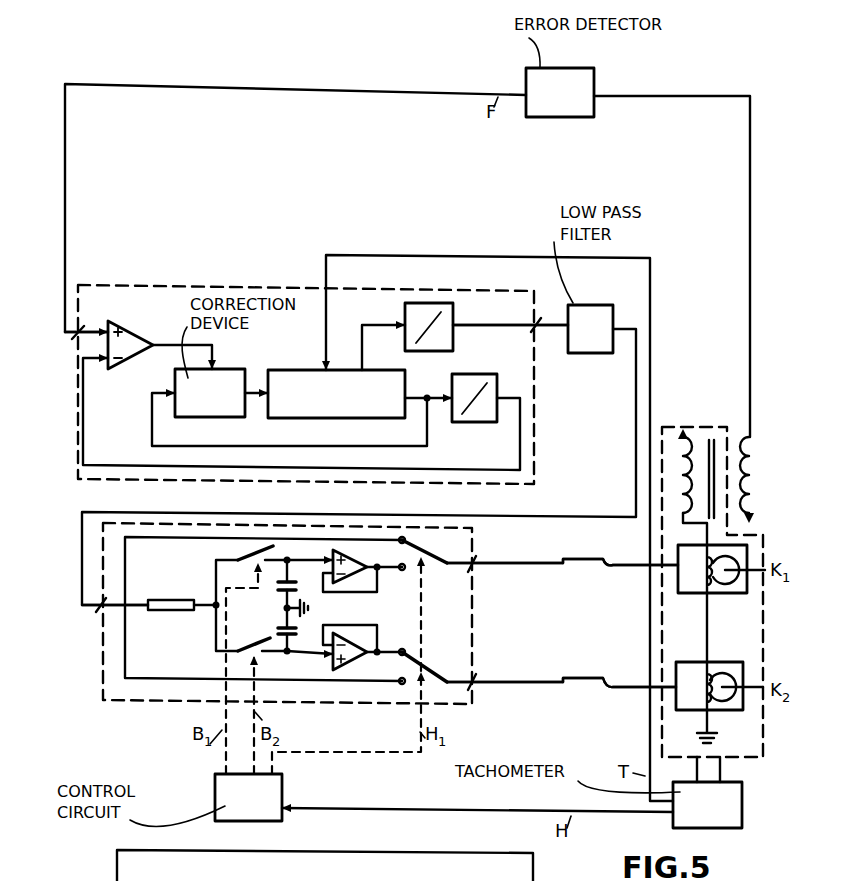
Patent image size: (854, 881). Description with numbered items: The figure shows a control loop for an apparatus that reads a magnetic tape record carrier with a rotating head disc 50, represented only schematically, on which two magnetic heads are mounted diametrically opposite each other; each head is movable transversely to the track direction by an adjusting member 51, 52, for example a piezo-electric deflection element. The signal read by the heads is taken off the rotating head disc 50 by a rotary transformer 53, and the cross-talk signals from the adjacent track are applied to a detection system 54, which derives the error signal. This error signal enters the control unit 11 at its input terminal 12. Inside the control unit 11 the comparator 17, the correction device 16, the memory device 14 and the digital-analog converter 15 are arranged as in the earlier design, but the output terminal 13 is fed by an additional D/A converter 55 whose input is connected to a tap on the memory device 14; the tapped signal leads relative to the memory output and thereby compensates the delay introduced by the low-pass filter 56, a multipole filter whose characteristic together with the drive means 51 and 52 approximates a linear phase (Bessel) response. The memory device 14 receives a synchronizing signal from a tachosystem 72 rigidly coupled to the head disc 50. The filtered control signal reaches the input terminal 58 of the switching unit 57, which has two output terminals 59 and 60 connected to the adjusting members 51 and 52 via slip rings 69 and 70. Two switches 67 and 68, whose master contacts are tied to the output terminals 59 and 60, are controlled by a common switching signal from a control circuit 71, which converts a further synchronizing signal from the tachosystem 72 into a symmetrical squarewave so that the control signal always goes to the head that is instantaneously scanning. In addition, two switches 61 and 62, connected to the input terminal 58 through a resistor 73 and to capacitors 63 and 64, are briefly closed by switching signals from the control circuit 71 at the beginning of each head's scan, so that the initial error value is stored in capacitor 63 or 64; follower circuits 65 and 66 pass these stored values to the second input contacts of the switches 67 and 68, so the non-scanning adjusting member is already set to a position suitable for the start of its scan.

The control unit 11 is at (227, 292).
The input terminal 12 is at (79, 337).
The output terminal 13 is at (567, 337).
The memory device 14 is at (370, 421).
The digital-analog converter 15 is at (467, 375).
The correction device 16 is at (222, 370).
The comparator 17 is at (129, 331).
The head disc 50 is at (764, 645).
The adjusting member 51 is at (727, 595).
The adjusting member 52 is at (711, 717).
The rotary transformer 53 is at (711, 482).
The detection system 54 is at (585, 69).
The additional D/A converter 55 is at (404, 316).
The low-pass filter 56 is at (586, 304).
The switching unit 57 is at (103, 661).
The input terminal 58 is at (99, 607).
The output terminal 59 is at (475, 568).
The output terminal 60 is at (474, 688).
The switch 61 is at (240, 552).
The switch 62 is at (260, 652).
The capacitor 63 is at (279, 592).
The capacitor 64 is at (279, 630).
The follower circuit 65 is at (379, 587).
The follower circuit 66 is at (378, 645).
The switch 67 is at (433, 557).
The switch 68 is at (425, 669).
The slip ring 69 is at (598, 558).
The slip ring 70 is at (598, 678).
The control circuit 71 is at (215, 795).
The tachosystem 72 is at (743, 802).
The resistor 73 is at (176, 600).